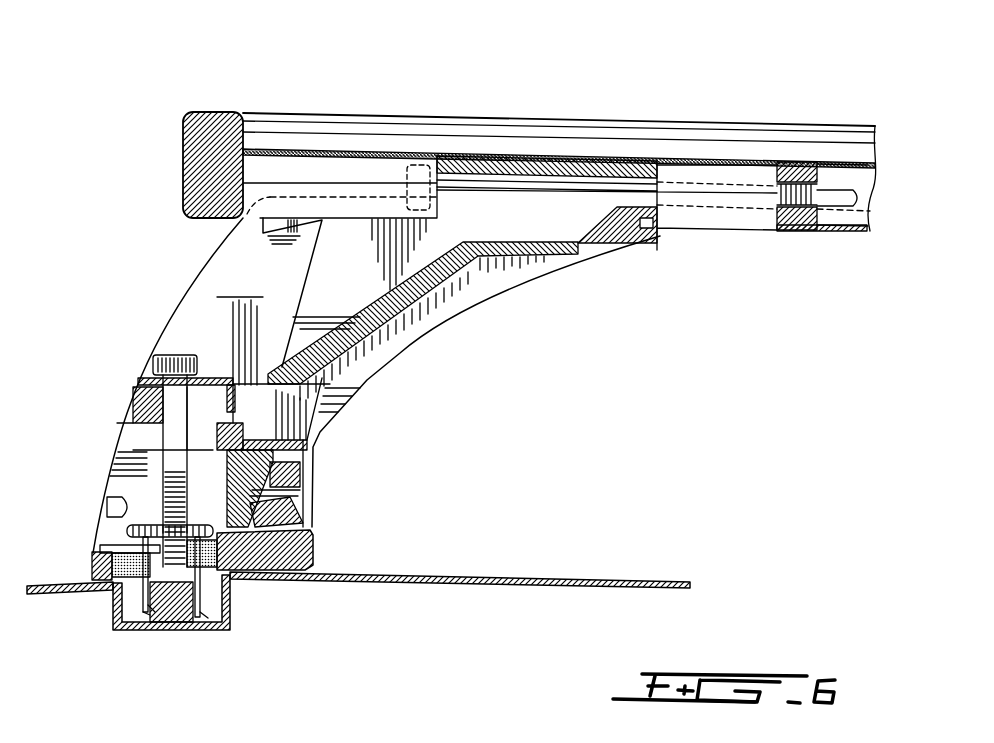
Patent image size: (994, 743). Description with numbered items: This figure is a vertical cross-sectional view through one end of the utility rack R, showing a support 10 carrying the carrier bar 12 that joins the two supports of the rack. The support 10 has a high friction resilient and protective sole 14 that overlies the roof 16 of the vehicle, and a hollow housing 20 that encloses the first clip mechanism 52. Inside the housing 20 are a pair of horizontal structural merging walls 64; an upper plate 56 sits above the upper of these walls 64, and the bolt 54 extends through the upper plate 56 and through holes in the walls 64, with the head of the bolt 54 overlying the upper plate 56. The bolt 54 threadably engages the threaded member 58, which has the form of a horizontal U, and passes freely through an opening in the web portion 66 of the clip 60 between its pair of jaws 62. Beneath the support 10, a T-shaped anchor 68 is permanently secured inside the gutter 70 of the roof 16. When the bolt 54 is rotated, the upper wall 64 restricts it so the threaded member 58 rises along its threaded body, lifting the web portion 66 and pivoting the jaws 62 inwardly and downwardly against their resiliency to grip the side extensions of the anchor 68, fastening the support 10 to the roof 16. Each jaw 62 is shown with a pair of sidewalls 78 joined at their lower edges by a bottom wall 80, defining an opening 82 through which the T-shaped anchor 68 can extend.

The utility rack R is at (472, 100).
The support 10 is at (440, 354).
The carrier bar 12 is at (529, 181).
The sole 14 is at (310, 547).
The roof 16 is at (578, 568).
The housing 20 is at (337, 250).
The first clip mechanism 52 is at (145, 516).
The bolt 54 is at (174, 386).
The upper plate 56 is at (214, 383).
The threaded member 58 is at (125, 537).
The clip 60 is at (142, 555).
The jaws 62 is at (228, 632).
The horizontal structural merging walls 64 is at (137, 393).
The web portion 66 is at (133, 530).
The T-shaped anchor 68 is at (177, 622).
The gutter 70 is at (117, 598).
The sidewalls 78 is at (123, 612).
The bottom wall 80 is at (141, 630).
The opening 82 is at (290, 510).